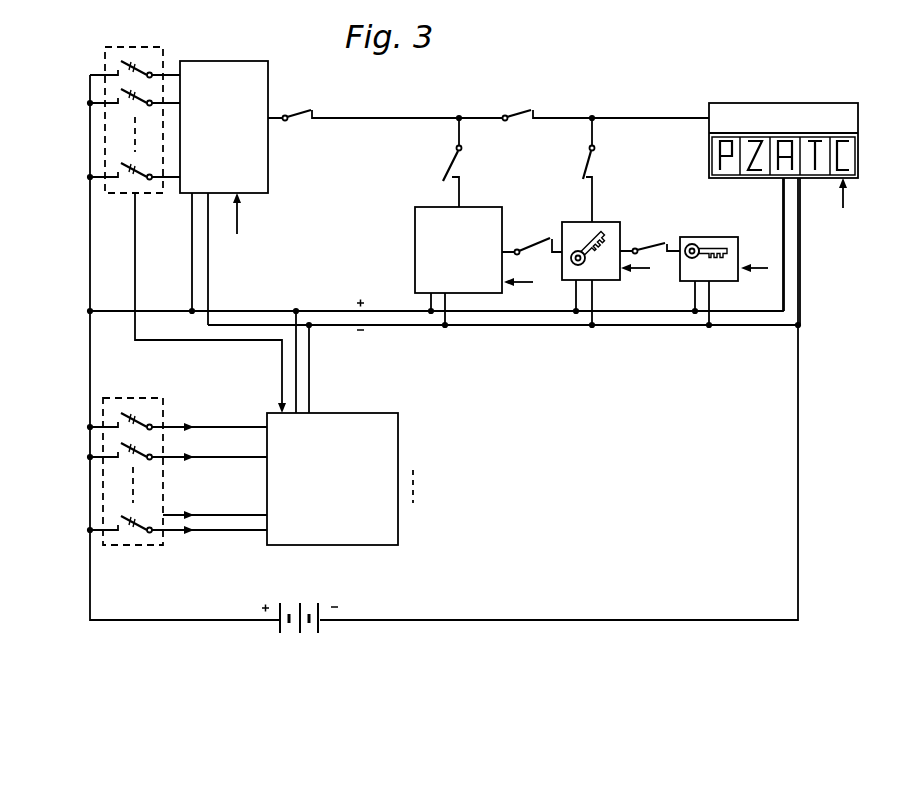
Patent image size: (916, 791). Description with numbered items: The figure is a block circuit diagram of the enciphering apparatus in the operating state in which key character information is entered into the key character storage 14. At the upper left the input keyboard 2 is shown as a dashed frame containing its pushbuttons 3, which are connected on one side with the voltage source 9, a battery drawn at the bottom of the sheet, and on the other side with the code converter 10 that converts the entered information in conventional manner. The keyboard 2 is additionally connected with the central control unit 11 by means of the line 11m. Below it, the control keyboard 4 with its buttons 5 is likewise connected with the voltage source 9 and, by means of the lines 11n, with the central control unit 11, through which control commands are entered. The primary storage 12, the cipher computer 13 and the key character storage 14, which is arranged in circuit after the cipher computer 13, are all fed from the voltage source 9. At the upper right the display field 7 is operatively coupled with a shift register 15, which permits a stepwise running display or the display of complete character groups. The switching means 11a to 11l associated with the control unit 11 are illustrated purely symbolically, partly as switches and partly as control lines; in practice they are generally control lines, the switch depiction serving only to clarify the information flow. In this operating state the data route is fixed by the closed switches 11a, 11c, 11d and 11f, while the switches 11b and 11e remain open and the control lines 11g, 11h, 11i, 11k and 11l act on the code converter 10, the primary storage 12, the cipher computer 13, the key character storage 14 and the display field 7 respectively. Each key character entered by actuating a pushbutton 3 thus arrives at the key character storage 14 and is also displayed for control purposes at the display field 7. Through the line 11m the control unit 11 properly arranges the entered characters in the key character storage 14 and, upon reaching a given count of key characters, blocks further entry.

The input keyboard 2 is at (172, 48).
The pushbuttons 3 is at (121, 90).
The control keyboard 4 is at (149, 386).
The buttons 5 is at (133, 400).
The display field 7 is at (858, 167).
The voltage source 9 is at (305, 600).
The code converter 10 is at (228, 134).
The central control unit 11 is at (333, 482).
The switching means 11a is at (420, 442).
The switching means 11b is at (457, 159).
The switching means 11c is at (583, 103).
The switching means 11d is at (594, 159).
The switching means 11e is at (532, 237).
The switching means 11f is at (650, 246).
The switching means 11g is at (243, 226).
The switching means 11h is at (535, 283).
The switching means 11i is at (641, 278).
The switching means 11k is at (761, 259).
The switching means 11l is at (398, 517).
The line 11m is at (245, 340).
The lines 11n is at (208, 455).
The primary storage 12 is at (468, 260).
The cipher computer 13 is at (576, 232).
The key character storage 14 is at (717, 242).
The shift register 15 is at (792, 117).